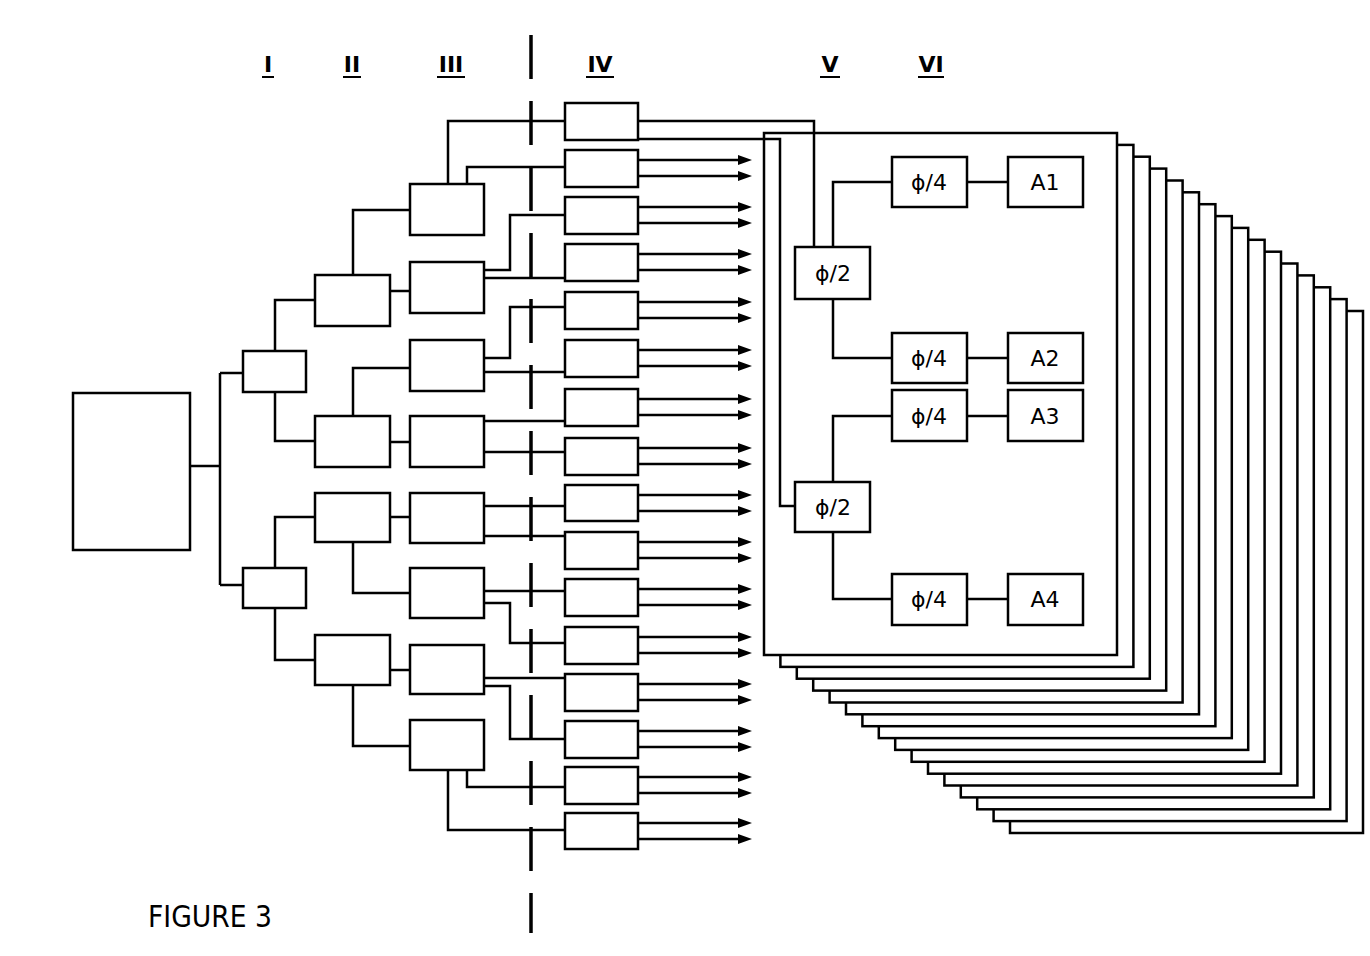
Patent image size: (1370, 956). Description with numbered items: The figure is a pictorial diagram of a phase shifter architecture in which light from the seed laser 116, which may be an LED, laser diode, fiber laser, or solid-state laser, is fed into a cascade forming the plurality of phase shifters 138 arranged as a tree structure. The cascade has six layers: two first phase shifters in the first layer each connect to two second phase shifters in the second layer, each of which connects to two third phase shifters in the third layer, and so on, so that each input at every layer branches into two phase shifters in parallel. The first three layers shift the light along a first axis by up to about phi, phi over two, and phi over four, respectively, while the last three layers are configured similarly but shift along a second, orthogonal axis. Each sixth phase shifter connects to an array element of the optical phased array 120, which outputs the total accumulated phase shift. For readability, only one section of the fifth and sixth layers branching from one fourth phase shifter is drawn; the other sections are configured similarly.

The seed laser 116 is at (114, 455).
The optical array 120 is at (1028, 77).
The plurality of phase shifters 138 is at (194, 895).